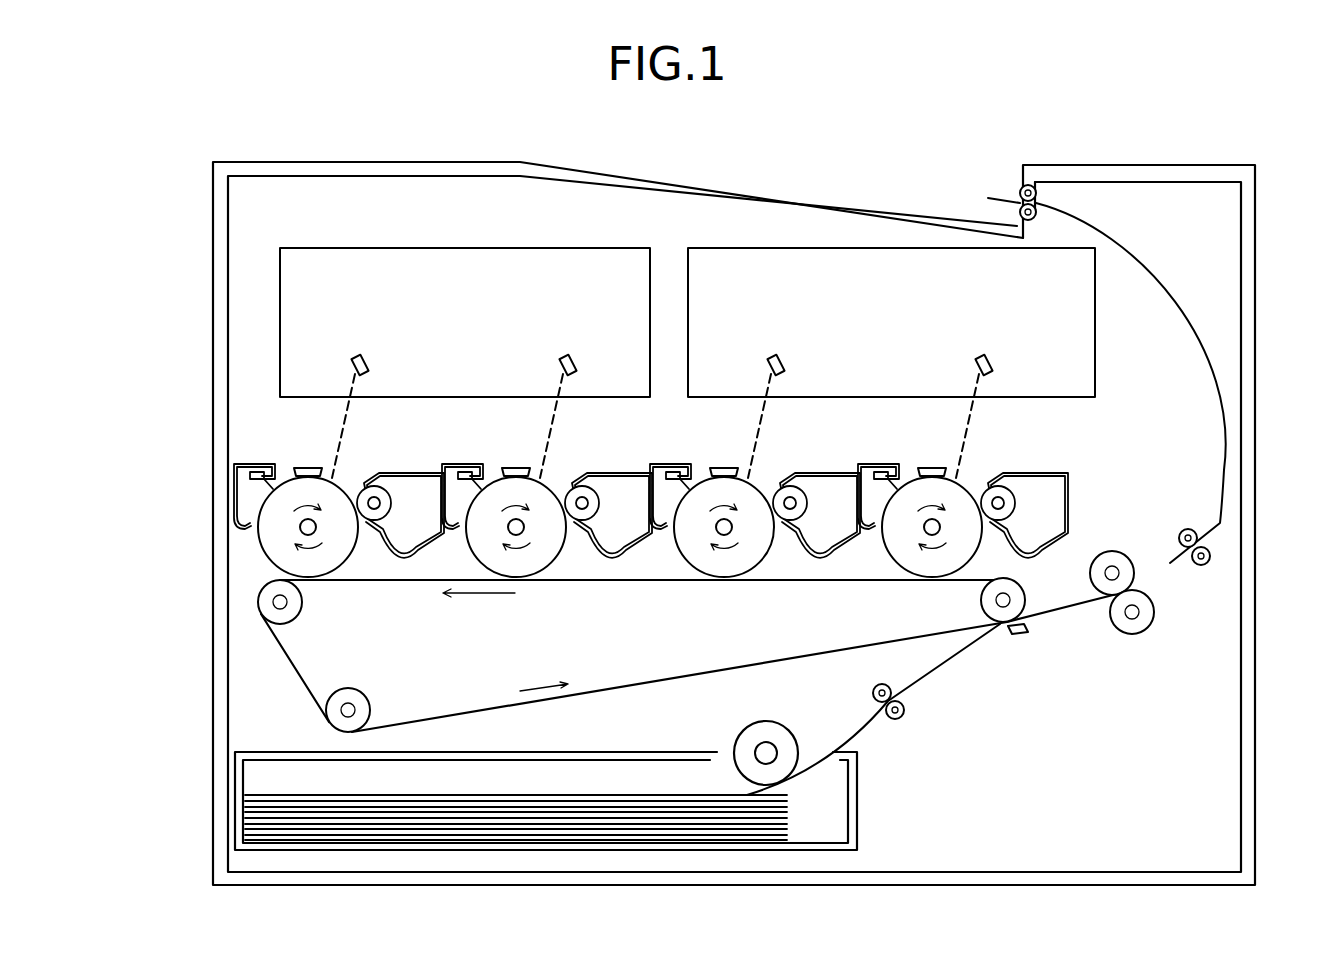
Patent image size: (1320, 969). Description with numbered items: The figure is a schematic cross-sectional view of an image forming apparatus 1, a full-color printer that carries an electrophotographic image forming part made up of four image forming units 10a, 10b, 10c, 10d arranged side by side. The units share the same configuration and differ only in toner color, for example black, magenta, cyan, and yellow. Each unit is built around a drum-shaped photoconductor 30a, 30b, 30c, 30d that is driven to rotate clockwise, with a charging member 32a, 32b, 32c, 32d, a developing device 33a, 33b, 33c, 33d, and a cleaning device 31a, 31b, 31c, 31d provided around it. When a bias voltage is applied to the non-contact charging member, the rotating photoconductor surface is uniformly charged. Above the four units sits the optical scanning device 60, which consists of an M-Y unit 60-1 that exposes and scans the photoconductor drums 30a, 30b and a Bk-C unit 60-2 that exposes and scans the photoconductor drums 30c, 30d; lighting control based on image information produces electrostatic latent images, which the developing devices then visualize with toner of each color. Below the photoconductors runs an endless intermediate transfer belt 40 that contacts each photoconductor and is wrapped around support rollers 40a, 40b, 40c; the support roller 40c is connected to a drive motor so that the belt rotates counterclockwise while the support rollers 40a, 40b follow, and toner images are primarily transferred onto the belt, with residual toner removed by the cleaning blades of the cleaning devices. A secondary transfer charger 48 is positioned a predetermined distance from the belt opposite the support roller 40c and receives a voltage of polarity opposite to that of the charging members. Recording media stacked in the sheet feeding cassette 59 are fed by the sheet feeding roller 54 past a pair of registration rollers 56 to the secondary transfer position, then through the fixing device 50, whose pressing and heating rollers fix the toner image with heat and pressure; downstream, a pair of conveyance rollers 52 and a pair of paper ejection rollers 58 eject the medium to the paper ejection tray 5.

The image forming apparatus 1 is at (182, 278).
The paper ejection tray 5 is at (917, 213).
The first image forming unit 10a is at (336, 470).
The second image forming unit 10b is at (544, 470).
The third image forming unit 10c is at (753, 470).
The fourth image forming unit 10d is at (959, 470).
The photoconductor drum 30a is at (347, 563).
The photoconductor drum 30b is at (555, 563).
The photoconductor drum 30c is at (763, 563).
The photoconductor drum 30d is at (975, 563).
The cleaning device 31a is at (248, 518).
The cleaning device 31b is at (456, 518).
The cleaning device 31c is at (664, 518).
The cleaning device 31d is at (872, 518).
The charging member 32a is at (310, 467).
The charging member 32b is at (518, 467).
The charging member 32c is at (726, 467).
The charging member 32d is at (934, 467).
The developing device 33a is at (413, 473).
The developing device 33b is at (621, 473).
The developing device 33c is at (829, 473).
The developing device 33d is at (1023, 470).
The intermediate transfer belt 40 is at (620, 581).
The support roller 40a is at (302, 612).
The support roller 40b is at (357, 688).
The support roller 40c is at (980, 595).
The secondary transfer charger 48 is at (1022, 635).
The fixing device 50 is at (1167, 632).
The pair of conveyance rollers 52 is at (1173, 522).
The sheet feeding roller 54 is at (788, 728).
The pair of registration rollers 56 is at (923, 713).
The pair of paper ejection rollers 58 is at (1011, 182).
The sheet feeding cassette 59 is at (858, 788).
The optical scanning device 60 is at (687, 305).
The M-Y unit 60-1 is at (464, 239).
The Bk-C unit 60-2 is at (744, 244).